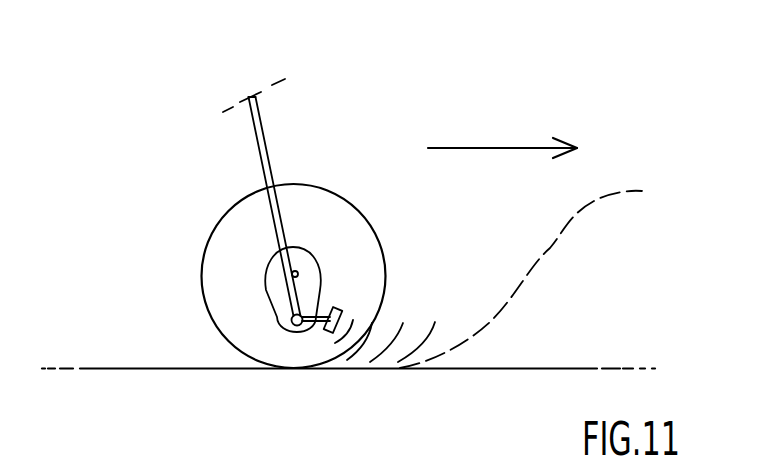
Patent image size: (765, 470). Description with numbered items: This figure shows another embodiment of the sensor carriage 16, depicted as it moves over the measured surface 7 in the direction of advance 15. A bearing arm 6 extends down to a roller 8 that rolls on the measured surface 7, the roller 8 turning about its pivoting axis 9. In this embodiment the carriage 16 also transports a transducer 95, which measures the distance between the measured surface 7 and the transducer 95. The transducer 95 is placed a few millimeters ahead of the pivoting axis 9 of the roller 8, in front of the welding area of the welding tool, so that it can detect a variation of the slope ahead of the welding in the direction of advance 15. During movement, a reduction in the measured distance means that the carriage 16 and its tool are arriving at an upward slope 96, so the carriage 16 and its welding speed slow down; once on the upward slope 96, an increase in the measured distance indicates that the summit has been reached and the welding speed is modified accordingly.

The bearing arm 6 is at (265, 132).
The measured surface 7 is at (95, 368).
The roller 8 is at (210, 238).
The pivoting axis 9 is at (282, 325).
The direction of advance 15 is at (482, 148).
The sensor carriage 16 is at (370, 148).
The transducer 95 is at (340, 308).
The upward slope 96 is at (502, 308).